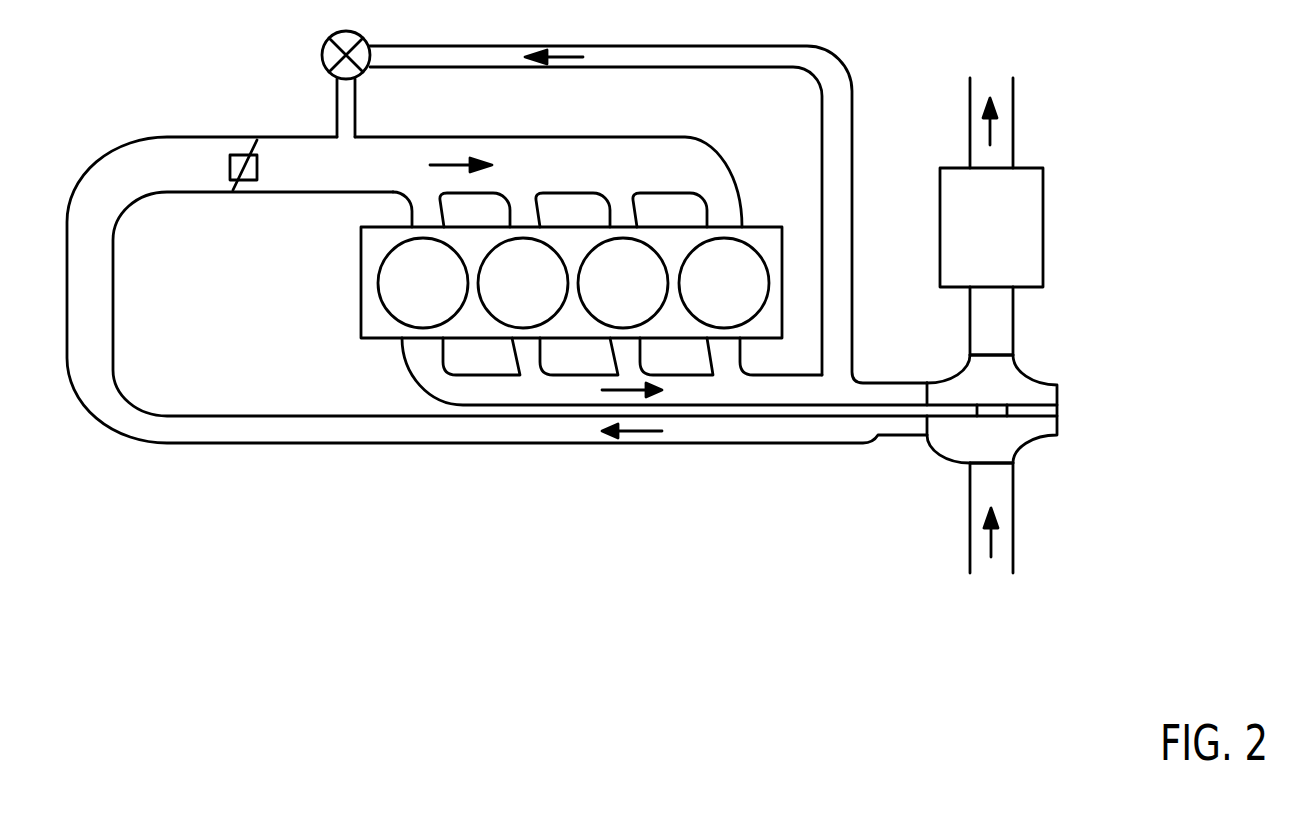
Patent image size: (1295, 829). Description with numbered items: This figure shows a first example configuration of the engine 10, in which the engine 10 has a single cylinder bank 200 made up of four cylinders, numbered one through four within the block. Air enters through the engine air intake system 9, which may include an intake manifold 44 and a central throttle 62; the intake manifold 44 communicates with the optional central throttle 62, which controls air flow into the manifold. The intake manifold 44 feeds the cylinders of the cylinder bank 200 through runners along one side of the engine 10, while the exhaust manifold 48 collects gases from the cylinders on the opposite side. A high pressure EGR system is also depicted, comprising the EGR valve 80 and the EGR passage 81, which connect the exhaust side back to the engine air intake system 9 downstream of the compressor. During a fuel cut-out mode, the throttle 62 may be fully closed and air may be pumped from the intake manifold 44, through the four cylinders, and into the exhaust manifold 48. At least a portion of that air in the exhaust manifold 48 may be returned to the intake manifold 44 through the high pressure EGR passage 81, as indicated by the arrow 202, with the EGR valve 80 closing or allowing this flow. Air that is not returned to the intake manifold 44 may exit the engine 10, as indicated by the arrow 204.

The engine 10 is at (361, 260).
The intake manifold 44 is at (493, 137).
The exhaust manifold 48 is at (430, 393).
The central throttle 62 is at (240, 157).
The EGR valve 80 is at (347, 31).
The EGR passage 81 is at (337, 116).
The cylinder bank 200 is at (378, 352).
The arrow 202 is at (563, 49).
The arrow 204 is at (990, 134).
The engine air intake system 9 is at (966, 574).